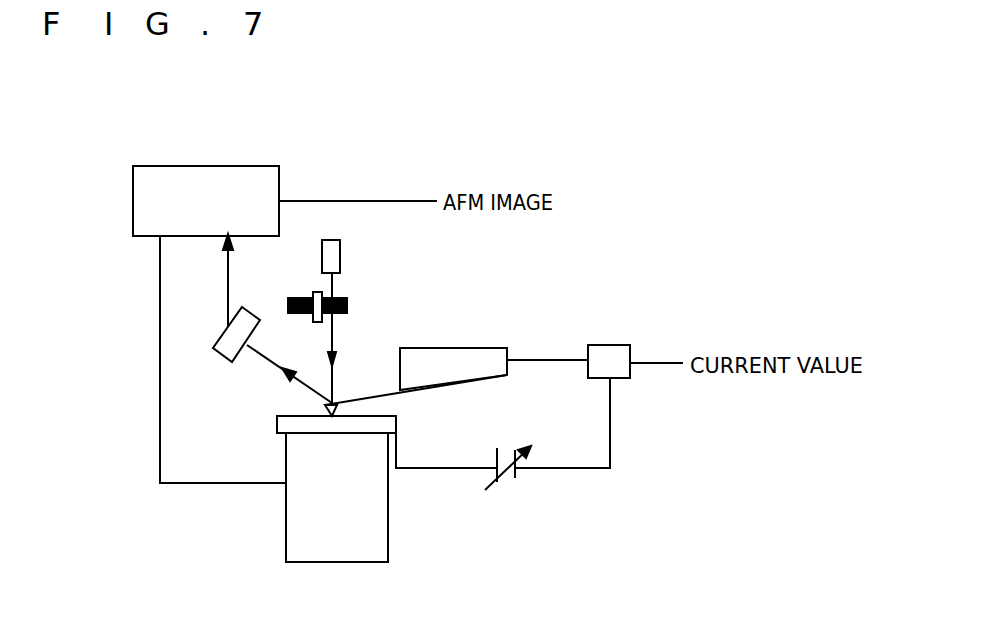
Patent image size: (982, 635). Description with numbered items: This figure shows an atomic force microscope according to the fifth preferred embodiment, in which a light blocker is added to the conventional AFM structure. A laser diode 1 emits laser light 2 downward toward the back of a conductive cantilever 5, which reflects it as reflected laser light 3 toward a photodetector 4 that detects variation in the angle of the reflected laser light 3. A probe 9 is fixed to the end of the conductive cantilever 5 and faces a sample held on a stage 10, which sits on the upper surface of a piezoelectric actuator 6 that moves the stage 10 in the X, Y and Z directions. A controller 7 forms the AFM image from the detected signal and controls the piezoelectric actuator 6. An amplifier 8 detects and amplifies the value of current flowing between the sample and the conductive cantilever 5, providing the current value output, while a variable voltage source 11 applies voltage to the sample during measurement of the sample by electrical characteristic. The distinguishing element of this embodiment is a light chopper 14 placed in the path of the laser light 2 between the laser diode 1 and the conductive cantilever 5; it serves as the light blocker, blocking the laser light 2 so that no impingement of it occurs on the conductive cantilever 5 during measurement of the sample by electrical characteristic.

The laser diode 1 is at (340, 256).
The laser light 2 is at (332, 380).
The reflected laser light 3 is at (263, 347).
The photodetector 4 is at (250, 313).
The conductive cantilever 5 is at (461, 348).
The piezoelectric actuator 6 is at (372, 518).
The controller 7 is at (210, 166).
The amplifier 8 is at (615, 345).
The probe 9 is at (326, 409).
The stage 10 is at (390, 425).
The variable voltage source 11 is at (518, 477).
The light chopper 14 is at (347, 305).